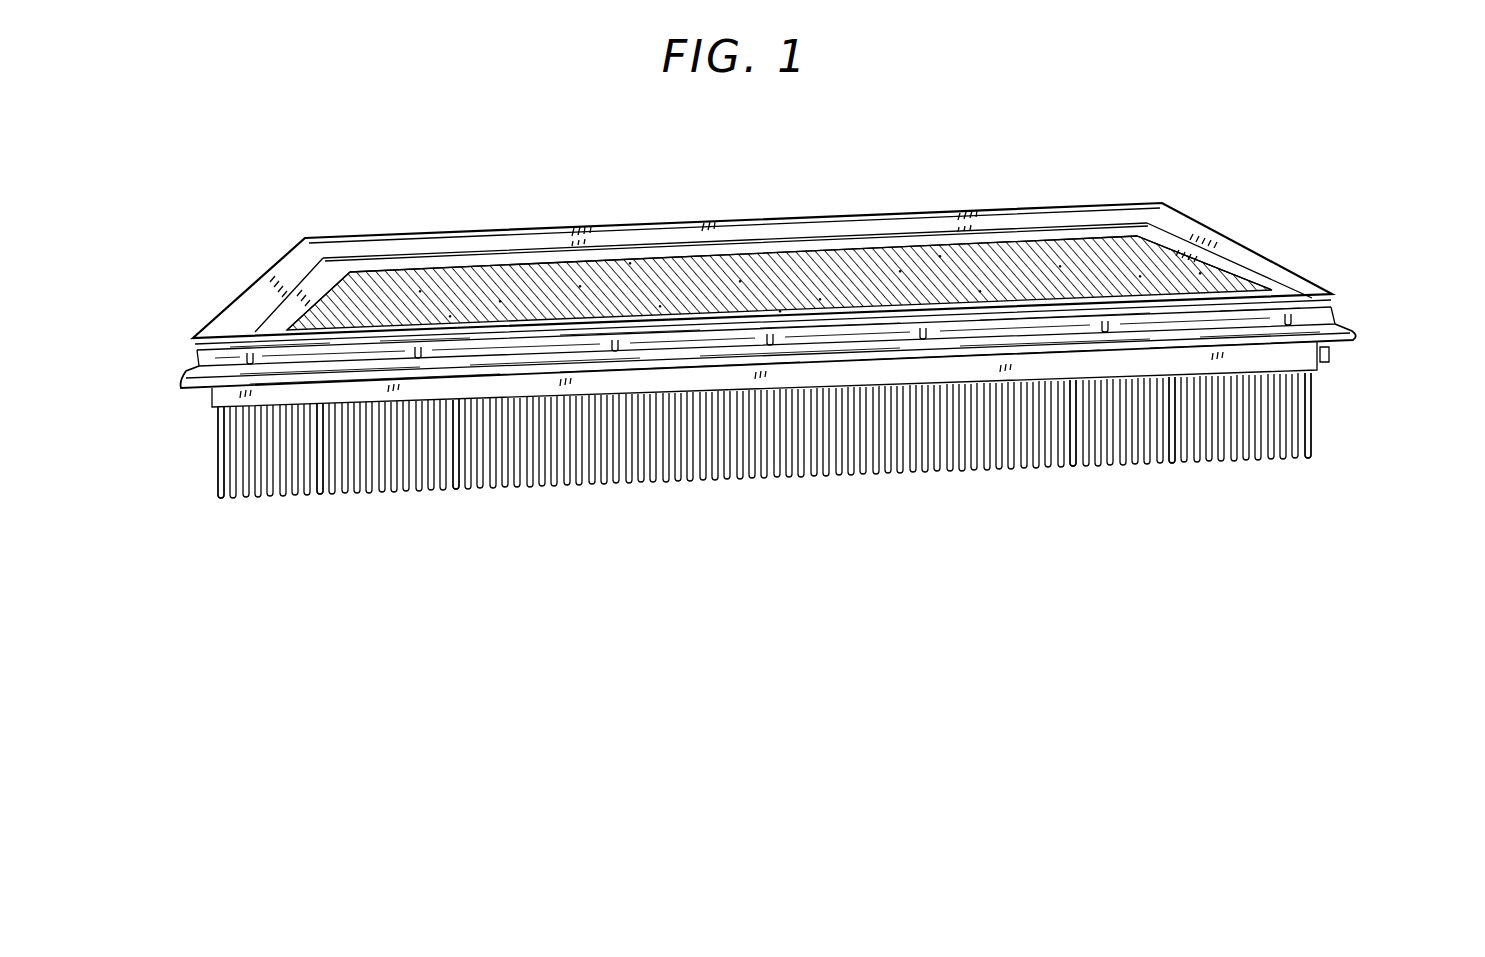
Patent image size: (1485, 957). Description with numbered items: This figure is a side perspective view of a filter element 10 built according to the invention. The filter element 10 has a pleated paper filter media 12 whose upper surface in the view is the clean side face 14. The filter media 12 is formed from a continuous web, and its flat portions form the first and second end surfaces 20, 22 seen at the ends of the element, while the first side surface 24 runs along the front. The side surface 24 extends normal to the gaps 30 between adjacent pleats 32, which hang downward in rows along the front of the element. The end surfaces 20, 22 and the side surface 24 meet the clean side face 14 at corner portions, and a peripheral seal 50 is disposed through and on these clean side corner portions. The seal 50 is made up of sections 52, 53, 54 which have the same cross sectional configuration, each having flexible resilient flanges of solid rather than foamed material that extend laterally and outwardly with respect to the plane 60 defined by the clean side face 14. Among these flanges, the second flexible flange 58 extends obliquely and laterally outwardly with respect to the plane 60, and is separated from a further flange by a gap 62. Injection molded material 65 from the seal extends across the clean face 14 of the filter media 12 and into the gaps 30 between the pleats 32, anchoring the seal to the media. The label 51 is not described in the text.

The filter element 10 is at (660, 216).
The pleated paper filter media 12 is at (728, 276).
The clean side face 14 is at (537, 274).
The first end surface 20 is at (1318, 407).
The second end surface 22 is at (215, 463).
The first side surface 24 is at (1175, 450).
The gaps 30 is at (318, 500).
The pleats 32 is at (460, 494).
The peripheral seal 50 is at (867, 222).
The left frame side 51 is at (262, 303).
The seal section 52 is at (1005, 235).
The seal section 53 is at (1240, 270).
The seal section 54 is at (479, 332).
The second flexible flange 58 is at (1334, 294).
The plane 60 is at (1351, 334).
The gap 62 is at (1320, 314).
The injection molded material 65 is at (892, 376).